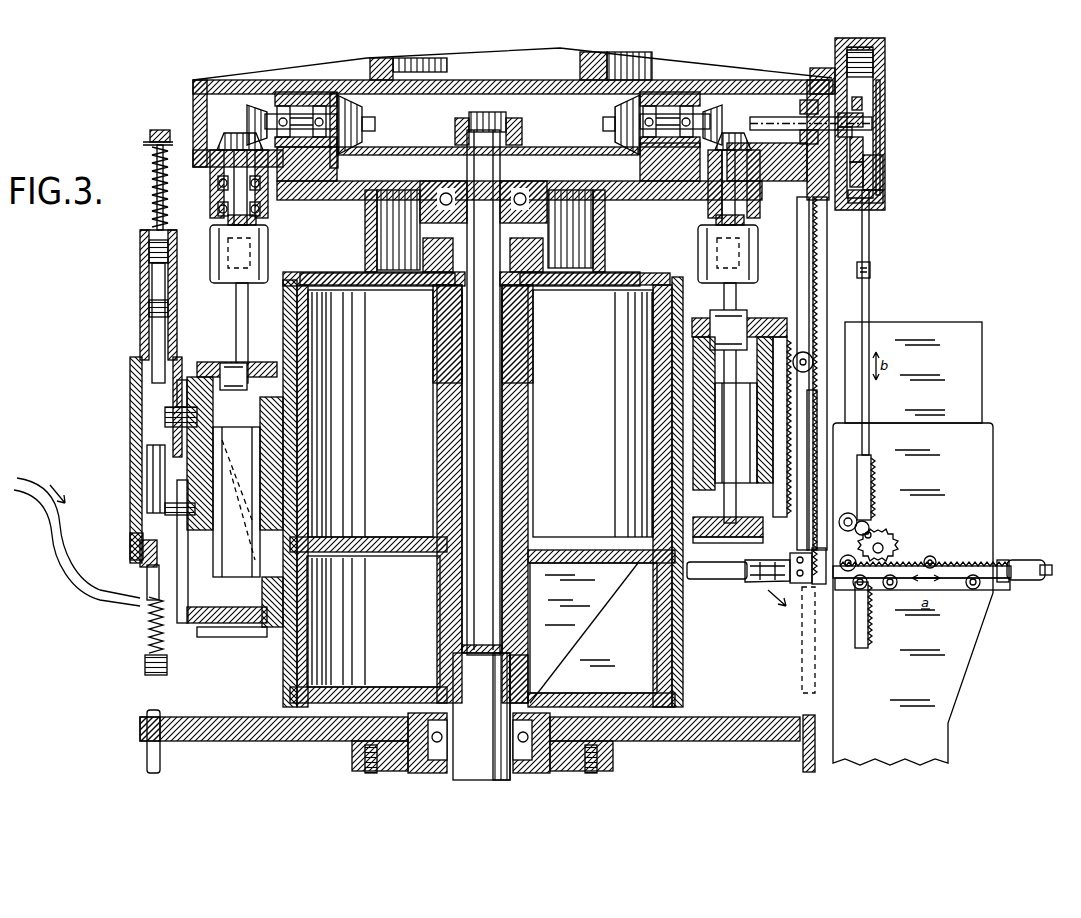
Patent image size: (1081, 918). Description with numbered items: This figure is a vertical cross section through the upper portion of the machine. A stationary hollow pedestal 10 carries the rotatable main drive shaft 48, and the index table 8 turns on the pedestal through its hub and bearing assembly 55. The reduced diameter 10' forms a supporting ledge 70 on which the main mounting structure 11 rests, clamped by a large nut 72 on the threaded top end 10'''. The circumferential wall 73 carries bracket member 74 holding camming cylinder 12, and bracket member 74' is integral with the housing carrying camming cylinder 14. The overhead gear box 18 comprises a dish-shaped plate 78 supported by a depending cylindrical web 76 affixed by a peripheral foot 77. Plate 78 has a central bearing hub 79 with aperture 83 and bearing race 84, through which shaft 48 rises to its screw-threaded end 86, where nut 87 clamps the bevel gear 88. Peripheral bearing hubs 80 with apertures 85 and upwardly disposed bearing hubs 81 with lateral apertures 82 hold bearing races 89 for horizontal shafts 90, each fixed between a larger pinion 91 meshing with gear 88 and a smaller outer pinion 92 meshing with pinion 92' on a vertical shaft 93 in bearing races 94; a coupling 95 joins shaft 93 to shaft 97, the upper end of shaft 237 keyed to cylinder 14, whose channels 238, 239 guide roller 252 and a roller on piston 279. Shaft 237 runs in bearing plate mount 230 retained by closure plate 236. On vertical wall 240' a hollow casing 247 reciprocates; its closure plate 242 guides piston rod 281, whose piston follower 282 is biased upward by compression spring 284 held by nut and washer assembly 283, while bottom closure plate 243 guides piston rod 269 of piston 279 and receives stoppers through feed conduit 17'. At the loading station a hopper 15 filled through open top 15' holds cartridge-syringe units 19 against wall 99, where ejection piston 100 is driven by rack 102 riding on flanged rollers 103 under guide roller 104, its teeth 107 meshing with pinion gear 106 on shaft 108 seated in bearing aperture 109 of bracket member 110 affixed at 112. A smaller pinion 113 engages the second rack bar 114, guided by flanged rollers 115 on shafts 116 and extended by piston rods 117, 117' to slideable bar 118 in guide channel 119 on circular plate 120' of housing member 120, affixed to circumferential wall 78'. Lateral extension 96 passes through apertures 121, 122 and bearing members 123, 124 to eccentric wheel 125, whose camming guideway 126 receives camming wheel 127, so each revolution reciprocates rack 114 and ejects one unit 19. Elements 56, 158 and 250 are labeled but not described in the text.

The index table 8 is at (203, 717).
The stationary hollow pedestal 10 is at (501, 416).
The reduced diameter 10' is at (457, 716).
The threaded top end 10''' is at (529, 250).
The main mounting structure 11 is at (323, 265).
The camming cylinder 12 is at (700, 385).
The camming cylinder 14 is at (280, 530).
The hopper 15 is at (923, 372).
The open top 15' is at (955, 306).
The feed conduit 17' is at (77, 542).
The overhead gear box 18 is at (653, 66).
The cartridge-syringe units 19 is at (147, 757).
The main drive shaft 48 is at (462, 608).
The hub and bearing assembly 55 is at (447, 750).
The nut 56 is at (140, 727).
The supporting ledge 70 is at (528, 690).
The large nut 72 is at (433, 243).
The circumferential wall 73 is at (285, 312).
The bracket member 74 is at (613, 490).
The bracket member 74' is at (356, 304).
The depending cylindrical web 76 is at (605, 232).
The peripheral foot 77 is at (615, 272).
The dish-shaped plate 78 is at (519, 200).
The circumferential wall 78' is at (778, 140).
The central bearing hub 79 is at (545, 215).
The peripheral bearing hubs 80 is at (268, 200).
The upwardly disposed bearing hubs 81 is at (325, 168).
The lateral aperture 82 is at (340, 155).
The vertically disposed aperture 83 is at (440, 188).
The bearing race 84 is at (530, 188).
The vertically disposed aperture 85 is at (256, 218).
The screw-threaded end 86 is at (470, 115).
The nut 87 is at (522, 133).
The bevel gear 88 is at (571, 147).
The bearing races 89 is at (283, 104).
The horizontally disposed shaft 90 is at (303, 113).
The larger pinion 91 is at (375, 120).
The smaller outer pinion 92 is at (493, 95).
The pinion 92' is at (459, 124).
The vertical shaft 93 is at (234, 192).
The bearing races 94 is at (218, 183).
The coupling 95 is at (210, 256).
The lateral extension 96 is at (765, 120).
The shaft 97 is at (236, 310).
The wall 99 is at (993, 479).
The ejection piston 100 is at (1038, 560).
The rack 102 is at (1010, 587).
The flanged rollers 103 is at (890, 590).
The upper guide roller 104 is at (948, 554).
The pinion gear 106 is at (924, 560).
The teeth 107 is at (1003, 560).
The shaft 108 is at (890, 535).
The bearing aperture 109 is at (884, 548).
The bracket member 110 is at (865, 521).
The bracket attachment 112 is at (818, 600).
The smaller pinion 113 is at (870, 530).
The second rack bar 114 is at (871, 471).
The flanged rollers 115 is at (846, 513).
The shafts 116 is at (857, 598).
The piston rod 117 is at (882, 322).
The extension piston rod 117' is at (884, 255).
The slideable bar 118 is at (880, 180).
The guide channel 119 is at (880, 138).
The housing member 120 is at (842, 124).
The circular plate 120' is at (904, 79).
The aperture 121 is at (805, 122).
The aperture 122 is at (862, 103).
The bearing member 123 is at (838, 132).
The bearing member 124 is at (863, 148).
The eccentric wheel 125 is at (863, 172).
The camming guideway 126 is at (863, 120).
The camming wheel 127 is at (883, 198).
The arm 158 is at (712, 580).
The bearing plate mount 230 is at (273, 627).
The closure plate 236 is at (235, 637).
The shaft 237 is at (197, 368).
The channel 238 is at (280, 515).
The channel 239 is at (305, 588).
The vertical wall 240' is at (189, 566).
The closure plate 242 is at (140, 236).
The bottom closure plate 243 is at (147, 578).
The reciprocable hollow casing 247 is at (140, 334).
The bolt 250 is at (145, 620).
The roller 252 is at (190, 512).
The piston rod 269 is at (150, 464).
The piston 279 is at (145, 396).
The piston rod 281 is at (157, 211).
The piston follower 282 is at (149, 263).
The nut and washer assembly 283 is at (150, 132).
The compression spring 284 is at (152, 162).